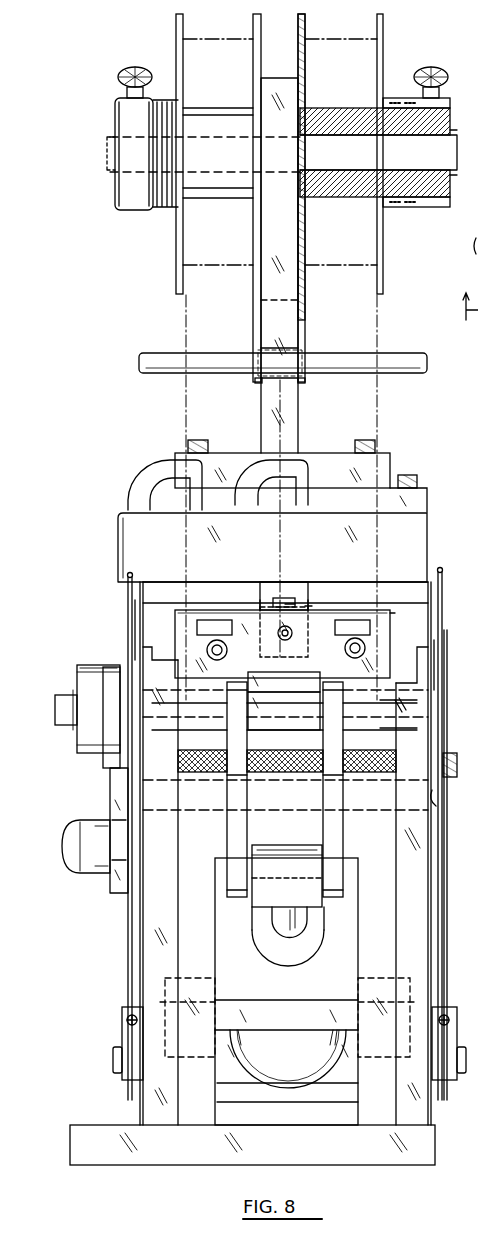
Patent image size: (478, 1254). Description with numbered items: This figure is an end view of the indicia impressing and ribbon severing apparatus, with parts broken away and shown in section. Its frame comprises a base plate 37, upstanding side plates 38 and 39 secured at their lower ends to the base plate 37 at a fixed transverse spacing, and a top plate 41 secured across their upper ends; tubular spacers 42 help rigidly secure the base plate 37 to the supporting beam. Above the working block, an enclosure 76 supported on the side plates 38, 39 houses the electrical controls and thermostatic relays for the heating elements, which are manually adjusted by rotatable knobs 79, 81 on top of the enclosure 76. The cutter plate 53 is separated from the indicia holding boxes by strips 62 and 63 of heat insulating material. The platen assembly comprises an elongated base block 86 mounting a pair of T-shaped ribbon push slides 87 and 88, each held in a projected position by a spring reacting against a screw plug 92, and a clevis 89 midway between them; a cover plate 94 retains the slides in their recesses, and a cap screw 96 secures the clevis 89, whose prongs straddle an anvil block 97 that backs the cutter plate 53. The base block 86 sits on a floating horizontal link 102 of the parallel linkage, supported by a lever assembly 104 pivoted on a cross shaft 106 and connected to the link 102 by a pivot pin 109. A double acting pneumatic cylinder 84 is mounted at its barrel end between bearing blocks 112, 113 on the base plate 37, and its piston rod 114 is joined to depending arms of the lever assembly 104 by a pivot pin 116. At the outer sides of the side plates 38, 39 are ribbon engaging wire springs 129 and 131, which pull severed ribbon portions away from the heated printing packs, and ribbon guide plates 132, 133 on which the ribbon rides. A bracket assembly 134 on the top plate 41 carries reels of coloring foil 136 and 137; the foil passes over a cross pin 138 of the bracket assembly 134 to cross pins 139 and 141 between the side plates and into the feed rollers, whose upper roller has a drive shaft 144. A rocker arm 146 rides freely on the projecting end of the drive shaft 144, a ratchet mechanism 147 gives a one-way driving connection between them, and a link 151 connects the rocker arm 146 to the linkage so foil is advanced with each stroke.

The bracket assembly 134 is at (174, 233).
The reel of coloring foil 136 is at (222, 38).
The reel of coloring foil 137 is at (340, 38).
The cross pin 138 is at (162, 362).
The rotatable knob 79 is at (162, 467).
The rotatable knob 81 is at (252, 472).
The top plate 41 is at (425, 500).
The enclosure 76 is at (127, 532).
The ribbon engaging wire spring 129 is at (127, 590).
The ribbon engaging wire spring 131 is at (443, 588).
The strip of heat insulating material 62 is at (260, 590).
The cutter plate 53 is at (275, 590).
The anvil block 97 is at (290, 598).
The strip of heat insulating material 63 is at (306, 592).
The clevis 89 is at (310, 605).
The ribbon push slide 88 is at (350, 624).
The ribbon push slide 87 is at (206, 622).
The base block 86 is at (180, 632).
The ribbon guide plate 132 is at (133, 648).
The cover plate 94 is at (385, 613).
The cap screw 96 is at (278, 635).
The screw plug 92 is at (219, 658).
The ratchet mechanism 147 is at (80, 668).
The drive shaft 144 is at (62, 697).
The pivot pin 109 is at (262, 683).
The floating horizontal link 102 is at (284, 711).
The ribbon guide plate 133 is at (437, 662).
The cross pin 139 is at (385, 700).
The cross pin 141 is at (385, 728).
The rocker arm 146 is at (105, 770).
The tubular spacer 42 is at (385, 765).
The lever assembly 104 is at (322, 797).
The cross shaft 106 is at (440, 828).
The link 151 is at (110, 887).
The side plate 39 is at (425, 875).
The pivot pin 116 is at (232, 885).
The piston rod 114 is at (298, 922).
The side plate 38 is at (145, 938).
The bearing block 112 is at (189, 985).
The bearing block 113 is at (375, 985).
The double acting pneumatic cylinder 84 is at (288, 1065).
The base plate 37 is at (343, 1160).